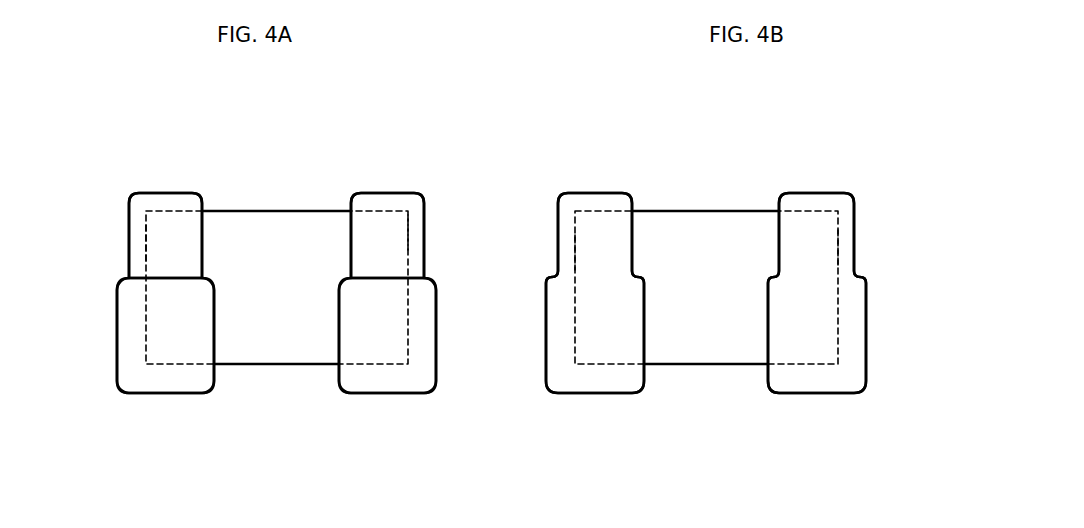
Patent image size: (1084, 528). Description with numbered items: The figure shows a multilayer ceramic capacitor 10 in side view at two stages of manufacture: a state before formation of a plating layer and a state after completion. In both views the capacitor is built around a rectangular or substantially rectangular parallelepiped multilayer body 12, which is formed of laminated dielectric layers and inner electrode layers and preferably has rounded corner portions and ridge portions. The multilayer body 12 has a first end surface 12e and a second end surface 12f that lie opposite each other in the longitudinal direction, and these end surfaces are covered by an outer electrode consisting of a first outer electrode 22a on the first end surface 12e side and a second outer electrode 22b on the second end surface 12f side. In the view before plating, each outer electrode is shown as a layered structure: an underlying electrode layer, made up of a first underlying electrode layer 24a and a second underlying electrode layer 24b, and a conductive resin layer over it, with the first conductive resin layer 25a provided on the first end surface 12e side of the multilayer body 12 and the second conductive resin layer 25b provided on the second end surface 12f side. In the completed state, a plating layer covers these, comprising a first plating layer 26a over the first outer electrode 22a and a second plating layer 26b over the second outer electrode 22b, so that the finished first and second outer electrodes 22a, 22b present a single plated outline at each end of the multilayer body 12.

In FIG. 4A, the multilayer ceramic capacitor 10 is at (133, 112).
In FIG. 4B, the multilayer ceramic capacitor 10 is at (632, 122).
In FIG. 4A, the multilayer body 12 is at (264, 211).
In FIG. 4B, the multilayer body 12 is at (693, 211).
In FIG. 4A, the first end surface 12e is at (146, 243).
In FIG. 4B, the first end surface 12e is at (575, 251).
In FIG. 4A, the second end surface 12f is at (408, 230).
In FIG. 4B, the second end surface 12f is at (838, 247).
In FIG. 4A, the first outer electrode 22a is at (173, 397).
In FIG. 4B, the first outer electrode 22a is at (594, 397).
In FIG. 4A, the second outer electrode 22b is at (387, 397).
In FIG. 4B, the second outer electrode 22b is at (819, 397).
In FIG. 4A, the first underlying electrode layer 24a is at (163, 193).
In FIG. 4A, the second underlying electrode layer 24b is at (384, 193).
In FIG. 4A, the first conductive resin layer 25a is at (117, 343).
In FIG. 4A, the second conductive resin layer 25b is at (436, 325).
In FIG. 4B, the first plating layer 26a is at (546, 362).
In FIG. 4B, the second plating layer 26b is at (866, 350).